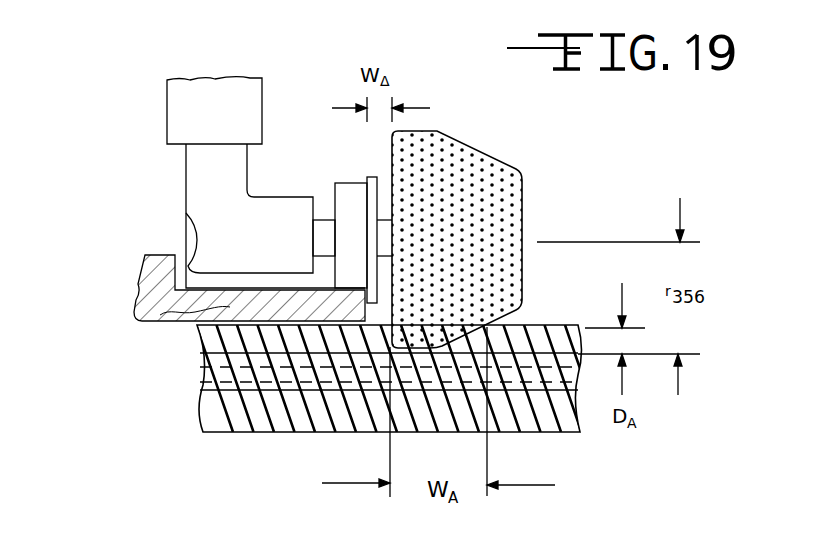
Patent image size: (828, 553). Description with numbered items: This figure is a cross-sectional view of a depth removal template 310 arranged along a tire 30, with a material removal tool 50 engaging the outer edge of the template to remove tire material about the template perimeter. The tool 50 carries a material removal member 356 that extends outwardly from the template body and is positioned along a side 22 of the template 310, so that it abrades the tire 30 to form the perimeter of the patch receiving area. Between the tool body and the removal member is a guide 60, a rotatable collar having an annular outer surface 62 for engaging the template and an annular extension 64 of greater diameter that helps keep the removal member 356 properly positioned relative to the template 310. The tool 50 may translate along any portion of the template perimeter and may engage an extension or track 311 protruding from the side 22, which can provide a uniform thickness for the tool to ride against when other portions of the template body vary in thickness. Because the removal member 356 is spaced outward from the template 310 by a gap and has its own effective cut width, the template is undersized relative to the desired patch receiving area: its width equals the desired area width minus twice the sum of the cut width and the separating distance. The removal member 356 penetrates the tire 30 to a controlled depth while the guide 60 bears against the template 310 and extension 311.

The material removal tool 50 is at (167, 112).
The side of the template 22 is at (186, 213).
The guide 60 is at (335, 193).
The annular outer surface 62 is at (347, 183).
The annular extension 64 is at (370, 176).
The material removal member 356 is at (453, 140).
The template 310 is at (135, 282).
The extension 311 is at (157, 321).
The tire 30 is at (227, 432).